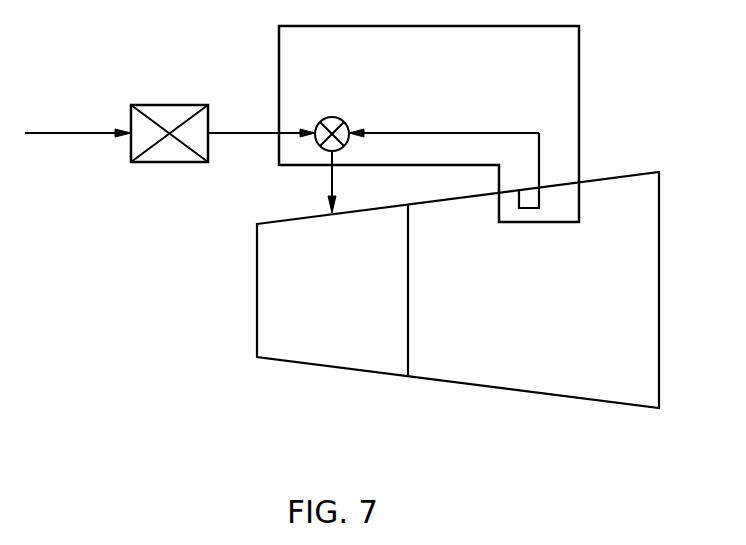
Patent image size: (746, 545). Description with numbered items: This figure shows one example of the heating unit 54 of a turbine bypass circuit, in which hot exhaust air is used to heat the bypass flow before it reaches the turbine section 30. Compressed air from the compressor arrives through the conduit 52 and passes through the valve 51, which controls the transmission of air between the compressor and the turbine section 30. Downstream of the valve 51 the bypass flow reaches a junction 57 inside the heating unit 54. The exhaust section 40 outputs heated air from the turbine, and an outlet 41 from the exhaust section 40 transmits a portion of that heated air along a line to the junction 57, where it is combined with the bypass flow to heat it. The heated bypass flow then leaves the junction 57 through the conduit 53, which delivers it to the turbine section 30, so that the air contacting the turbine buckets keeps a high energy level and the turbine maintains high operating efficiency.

The turbine section 30 is at (320, 355).
The exhaust section 40 is at (628, 265).
The outlet 41 is at (560, 192).
The valve 51 is at (170, 105).
The conduit 52 is at (67, 132).
The conduit 53 is at (330, 182).
The heating unit 54 is at (579, 65).
The junction 57 is at (345, 120).